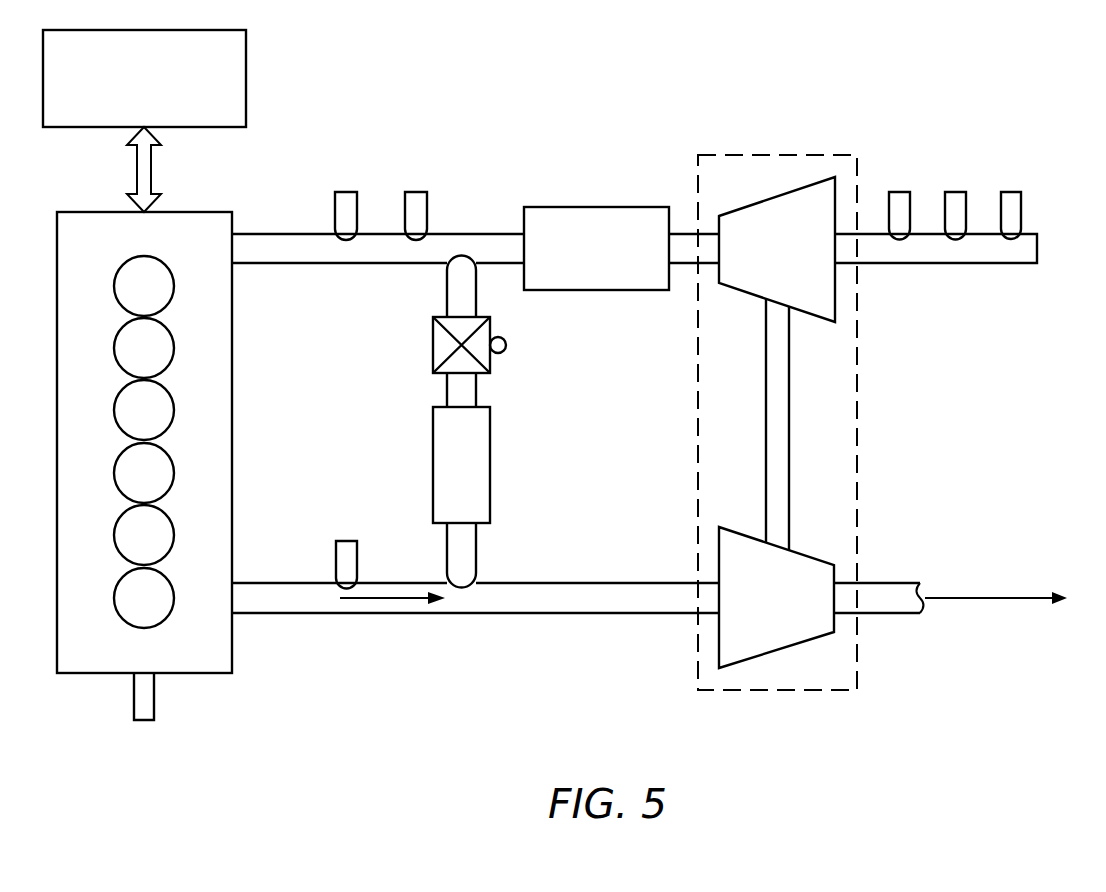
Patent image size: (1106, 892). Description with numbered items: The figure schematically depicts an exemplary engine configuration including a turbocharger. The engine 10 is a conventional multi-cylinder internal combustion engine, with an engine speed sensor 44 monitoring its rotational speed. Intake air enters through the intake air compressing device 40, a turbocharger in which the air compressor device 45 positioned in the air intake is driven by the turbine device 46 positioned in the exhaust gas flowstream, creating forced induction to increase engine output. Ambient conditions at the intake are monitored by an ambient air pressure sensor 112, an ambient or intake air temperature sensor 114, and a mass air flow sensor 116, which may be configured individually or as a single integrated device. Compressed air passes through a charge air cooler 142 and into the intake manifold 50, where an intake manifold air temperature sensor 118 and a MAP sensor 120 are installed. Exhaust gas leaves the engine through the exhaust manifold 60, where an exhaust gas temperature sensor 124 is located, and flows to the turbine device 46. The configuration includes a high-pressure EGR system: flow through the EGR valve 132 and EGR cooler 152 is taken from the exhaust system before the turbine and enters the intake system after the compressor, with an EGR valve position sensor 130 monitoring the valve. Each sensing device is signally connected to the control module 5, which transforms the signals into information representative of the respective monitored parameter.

The control module 5 is at (236, 81).
The engine 10 is at (224, 221).
The engine speed sensor 44 is at (147, 705).
The intake manifold 50 is at (277, 255).
The MAP sensor 120 is at (353, 206).
The intake manifold air temperature sensor 118 is at (422, 205).
The charge air cooler 142 is at (593, 222).
The intake air compressing device 40 is at (767, 155).
The air compressor device 45 is at (808, 208).
The turbine device 46 is at (802, 620).
The mass air flow sensor 116 is at (900, 202).
The intake air temperature sensor 114 is at (958, 207).
The ambient air pressure sensor 112 is at (1015, 205).
The EGR valve 132 is at (438, 357).
The EGR valve position sensor 130 is at (507, 347).
The EGR cooler 152 is at (478, 459).
The exhaust manifold 60 is at (523, 605).
The exhaust gas temperature sensor 124 is at (351, 531).